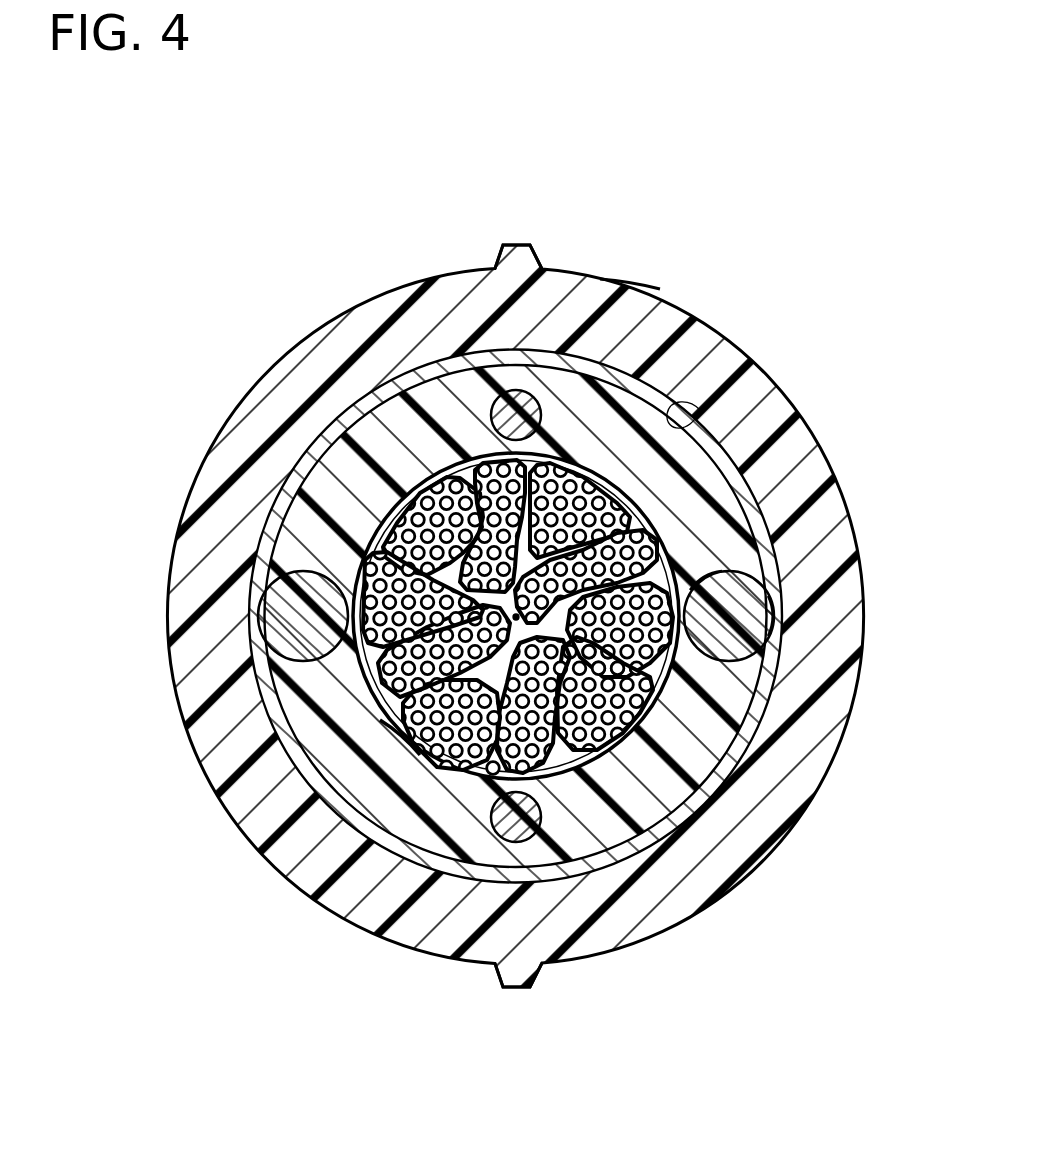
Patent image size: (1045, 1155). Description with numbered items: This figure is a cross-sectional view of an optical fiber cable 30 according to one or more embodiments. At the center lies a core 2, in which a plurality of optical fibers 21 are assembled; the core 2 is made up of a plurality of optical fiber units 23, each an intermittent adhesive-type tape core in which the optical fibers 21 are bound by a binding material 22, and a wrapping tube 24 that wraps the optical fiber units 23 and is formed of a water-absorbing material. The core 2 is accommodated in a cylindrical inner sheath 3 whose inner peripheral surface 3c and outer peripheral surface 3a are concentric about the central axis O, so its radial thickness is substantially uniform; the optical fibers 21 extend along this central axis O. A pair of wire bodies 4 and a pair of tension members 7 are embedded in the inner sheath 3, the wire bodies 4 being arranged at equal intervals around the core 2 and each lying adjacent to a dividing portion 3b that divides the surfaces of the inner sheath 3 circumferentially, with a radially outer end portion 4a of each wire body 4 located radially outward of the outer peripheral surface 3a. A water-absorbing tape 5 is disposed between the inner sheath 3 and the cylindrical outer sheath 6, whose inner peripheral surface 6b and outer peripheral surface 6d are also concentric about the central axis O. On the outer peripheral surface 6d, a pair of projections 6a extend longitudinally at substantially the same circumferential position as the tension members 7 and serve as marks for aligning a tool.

The optical fiber cable 30 is at (200, 200).
The core 2 is at (469, 774).
The inner sheath 3 is at (712, 727).
The outer peripheral surface of the inner sheath 3a is at (717, 443).
The dividing portion 3b is at (735, 579).
The inner peripheral surface of the inner sheath 3c is at (403, 735).
The wire body 4 is at (730, 615).
The radially outer end portion 4a is at (772, 624).
The water-absorbing tape 5 is at (640, 376).
The outer sheath 6 is at (390, 333).
The projection 6a is at (514, 254).
The inner peripheral surface of the outer sheath 6b is at (700, 410).
The outer peripheral surface of the outer sheath 6d is at (637, 289).
The tension member 7 is at (520, 410).
The optical fiber 21 is at (465, 762).
The binding material 22 is at (490, 770).
The optical fiber unit 23 is at (508, 778).
The wrapping tube 24 is at (578, 762).
The central axis O is at (516, 617).